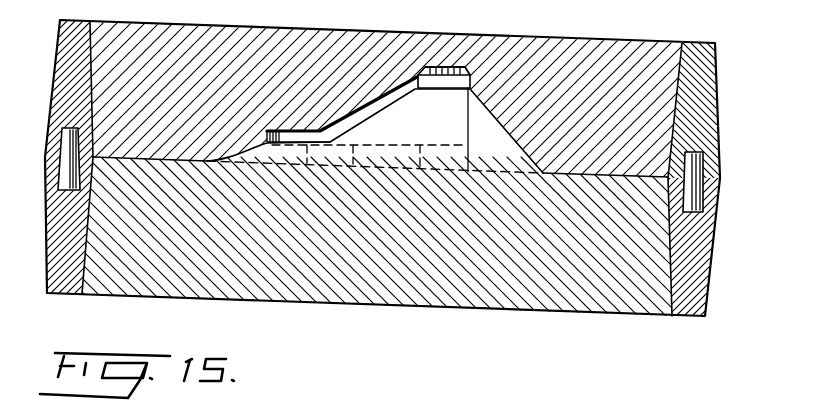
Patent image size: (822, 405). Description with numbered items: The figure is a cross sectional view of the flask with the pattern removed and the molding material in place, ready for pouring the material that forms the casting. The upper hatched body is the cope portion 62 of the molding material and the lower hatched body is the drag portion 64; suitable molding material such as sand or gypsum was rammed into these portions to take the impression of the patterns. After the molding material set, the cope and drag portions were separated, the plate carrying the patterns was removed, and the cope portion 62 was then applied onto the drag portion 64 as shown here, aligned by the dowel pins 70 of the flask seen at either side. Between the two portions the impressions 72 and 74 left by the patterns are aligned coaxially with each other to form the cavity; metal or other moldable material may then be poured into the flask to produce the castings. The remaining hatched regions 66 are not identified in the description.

The cope portion 62 is at (651, 60).
The drag portion 64 is at (613, 304).
The mold body 66 is at (590, 52).
The dowel pins 70 is at (60, 141).
The impression 72 is at (392, 97).
The impression 74 is at (415, 86).